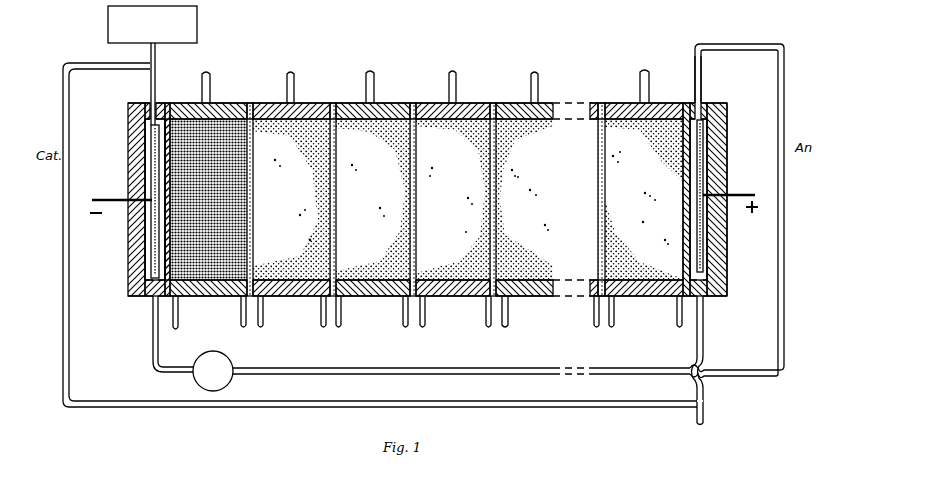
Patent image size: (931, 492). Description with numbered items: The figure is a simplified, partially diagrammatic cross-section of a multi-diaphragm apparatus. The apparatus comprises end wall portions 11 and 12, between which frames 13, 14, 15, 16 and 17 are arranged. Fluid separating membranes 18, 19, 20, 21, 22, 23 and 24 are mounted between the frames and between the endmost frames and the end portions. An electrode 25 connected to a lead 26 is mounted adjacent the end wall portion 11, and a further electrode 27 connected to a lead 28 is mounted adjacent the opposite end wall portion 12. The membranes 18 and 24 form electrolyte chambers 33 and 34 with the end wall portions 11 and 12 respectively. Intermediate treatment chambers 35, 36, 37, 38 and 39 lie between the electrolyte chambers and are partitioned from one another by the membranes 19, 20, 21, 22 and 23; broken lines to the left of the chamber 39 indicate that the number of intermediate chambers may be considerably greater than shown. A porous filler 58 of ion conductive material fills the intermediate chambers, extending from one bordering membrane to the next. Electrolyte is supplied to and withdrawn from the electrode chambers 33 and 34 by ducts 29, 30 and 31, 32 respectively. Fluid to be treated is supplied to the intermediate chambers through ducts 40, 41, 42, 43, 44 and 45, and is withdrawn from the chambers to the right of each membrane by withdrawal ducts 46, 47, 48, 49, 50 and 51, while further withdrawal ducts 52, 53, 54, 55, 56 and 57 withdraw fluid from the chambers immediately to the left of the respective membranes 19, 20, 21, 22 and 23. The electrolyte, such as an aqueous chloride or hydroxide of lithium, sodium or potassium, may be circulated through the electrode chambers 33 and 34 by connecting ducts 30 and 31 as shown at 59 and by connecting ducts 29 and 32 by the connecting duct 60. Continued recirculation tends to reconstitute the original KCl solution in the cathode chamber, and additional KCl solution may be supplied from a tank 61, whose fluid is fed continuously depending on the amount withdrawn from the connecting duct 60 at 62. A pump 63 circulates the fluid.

The end wall portion 11 is at (128, 142).
The end wall portion 12 is at (726, 146).
The frame 13 is at (204, 297).
The frame 14 is at (284, 297).
The frame 15 is at (366, 297).
The frame 16 is at (446, 297).
The frame 17 is at (661, 297).
The fluid separating membrane 18 is at (169, 207).
The fluid separating membrane 19 is at (253, 212).
The fluid separating membrane 20 is at (336, 212).
The fluid separating membrane 21 is at (416, 212).
The fluid separating membrane 22 is at (497, 214).
The fluid separating membrane 23 is at (599, 205).
The fluid separating membrane 24 is at (686, 212).
The electrode 25 is at (150, 223).
The lead 26 is at (112, 198).
The electrode 27 is at (703, 238).
The lead 28 is at (738, 194).
The duct 29 is at (150, 81).
The duct 30 is at (153, 328).
The duct 31 is at (702, 82).
The duct 32 is at (704, 324).
The electrolyte chamber 33 is at (161, 251).
The electrolyte chamber 34 is at (707, 259).
The intermediate treatment chamber 35 is at (201, 180).
The intermediate treatment chamber 36 is at (283, 180).
The intermediate treatment chamber 37 is at (365, 178).
The intermediate treatment chamber 38 is at (445, 178).
The intermediate treatment chamber 39 is at (644, 199).
The duct 40 is at (211, 91).
The duct 41 is at (294, 91).
The duct 42 is at (375, 89).
The duct 43 is at (457, 90).
The duct 44 is at (539, 90).
The duct 45 is at (649, 89).
The withdrawal duct 46 is at (179, 327).
The withdrawal duct 47 is at (247, 326).
The withdrawal duct 48 is at (341, 326).
The withdrawal duct 49 is at (426, 326).
The withdrawal duct 50 is at (509, 326).
The withdrawal duct 51 is at (614, 326).
The withdrawal duct 52 is at (257, 327).
The withdrawal duct 53 is at (321, 327).
The withdrawal duct 54 is at (403, 327).
The withdrawal duct 55 is at (486, 327).
The withdrawal duct 56 is at (594, 327).
The withdrawal duct 57 is at (677, 327).
The porous filler 58 is at (277, 98).
The connection 59 is at (300, 377).
The connecting duct 60 is at (300, 409).
The tank 61 is at (152, 24).
The withdrawal point 62 is at (704, 416).
The pump 63 is at (196, 381).